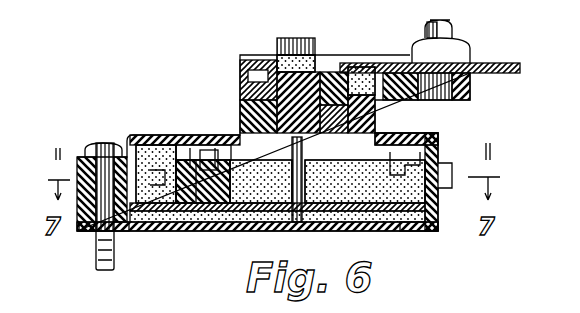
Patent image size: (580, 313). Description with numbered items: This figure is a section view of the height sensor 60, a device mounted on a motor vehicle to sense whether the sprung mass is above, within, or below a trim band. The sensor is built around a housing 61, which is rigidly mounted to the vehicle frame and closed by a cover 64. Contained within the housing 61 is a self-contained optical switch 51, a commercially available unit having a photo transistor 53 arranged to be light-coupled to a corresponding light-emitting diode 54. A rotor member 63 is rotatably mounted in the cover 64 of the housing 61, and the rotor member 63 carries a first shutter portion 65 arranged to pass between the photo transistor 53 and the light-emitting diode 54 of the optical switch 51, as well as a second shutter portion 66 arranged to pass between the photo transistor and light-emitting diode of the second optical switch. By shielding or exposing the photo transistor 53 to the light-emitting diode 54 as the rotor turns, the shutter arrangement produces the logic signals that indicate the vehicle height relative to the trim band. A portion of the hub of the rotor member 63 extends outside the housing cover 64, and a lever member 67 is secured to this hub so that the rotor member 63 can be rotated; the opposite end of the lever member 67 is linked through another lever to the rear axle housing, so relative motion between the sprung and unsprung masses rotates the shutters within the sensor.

The height sensor 60 is at (219, 55).
The lever member 67 is at (490, 63).
The cover 64 is at (410, 137).
The first shutter portion 65 is at (198, 170).
The rotor member 63 is at (204, 168).
The optical switch 51 is at (204, 190).
The light-emitting diode 54 is at (192, 190).
The photo transistor 53 is at (230, 185).
The second shutter portion 66 is at (392, 160).
The housing 61 is at (414, 230).